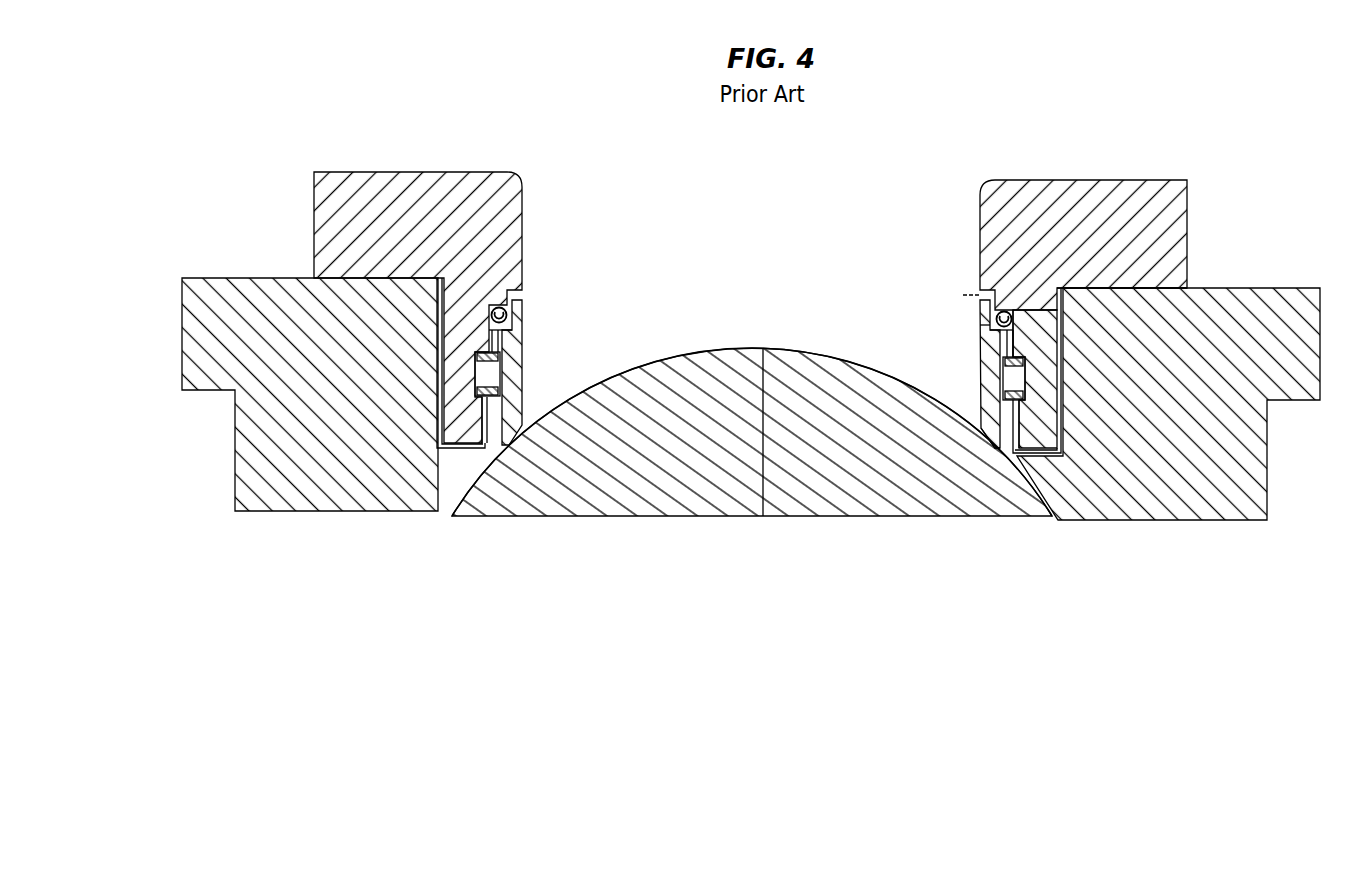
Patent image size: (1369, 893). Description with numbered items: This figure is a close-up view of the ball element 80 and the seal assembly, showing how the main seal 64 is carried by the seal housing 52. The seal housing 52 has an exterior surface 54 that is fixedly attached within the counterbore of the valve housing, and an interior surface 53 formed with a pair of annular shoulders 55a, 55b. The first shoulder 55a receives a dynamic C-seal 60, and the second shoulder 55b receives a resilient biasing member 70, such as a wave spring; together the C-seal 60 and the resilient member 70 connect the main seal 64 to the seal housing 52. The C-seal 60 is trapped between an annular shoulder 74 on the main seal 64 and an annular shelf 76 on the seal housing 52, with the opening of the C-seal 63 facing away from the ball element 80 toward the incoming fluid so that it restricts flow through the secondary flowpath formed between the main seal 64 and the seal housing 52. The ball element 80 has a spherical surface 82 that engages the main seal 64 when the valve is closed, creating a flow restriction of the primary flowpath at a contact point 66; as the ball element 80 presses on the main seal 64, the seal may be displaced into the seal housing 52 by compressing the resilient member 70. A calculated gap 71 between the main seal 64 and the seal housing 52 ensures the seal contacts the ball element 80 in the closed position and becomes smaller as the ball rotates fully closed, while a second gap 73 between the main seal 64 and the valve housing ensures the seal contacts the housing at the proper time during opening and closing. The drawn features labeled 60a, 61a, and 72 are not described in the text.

The seal housing 52 is at (1172, 210).
The interior surface 53 is at (1035, 355).
The exterior surface 54 is at (1087, 427).
The annular shoulder 55a is at (1012, 352).
The annular shoulder 55b is at (1055, 300).
The dynamic C-seal 60 is at (980, 313).
The bearing roller 60a is at (1018, 379).
The holder lip 61a is at (978, 325).
The opening of the C-seal 63 is at (1001, 306).
The main seal 64 is at (980, 358).
The contact point 66 is at (995, 450).
The resilient biasing member 70 is at (1063, 360).
The gap 71 is at (969, 292).
The spacer 72 is at (1013, 310).
The gap 73 is at (1049, 455).
The annular shoulder 74 is at (980, 343).
The annular shelf 76 is at (1007, 314).
The ball element 80 is at (814, 326).
The spherical surface 82 is at (725, 345).